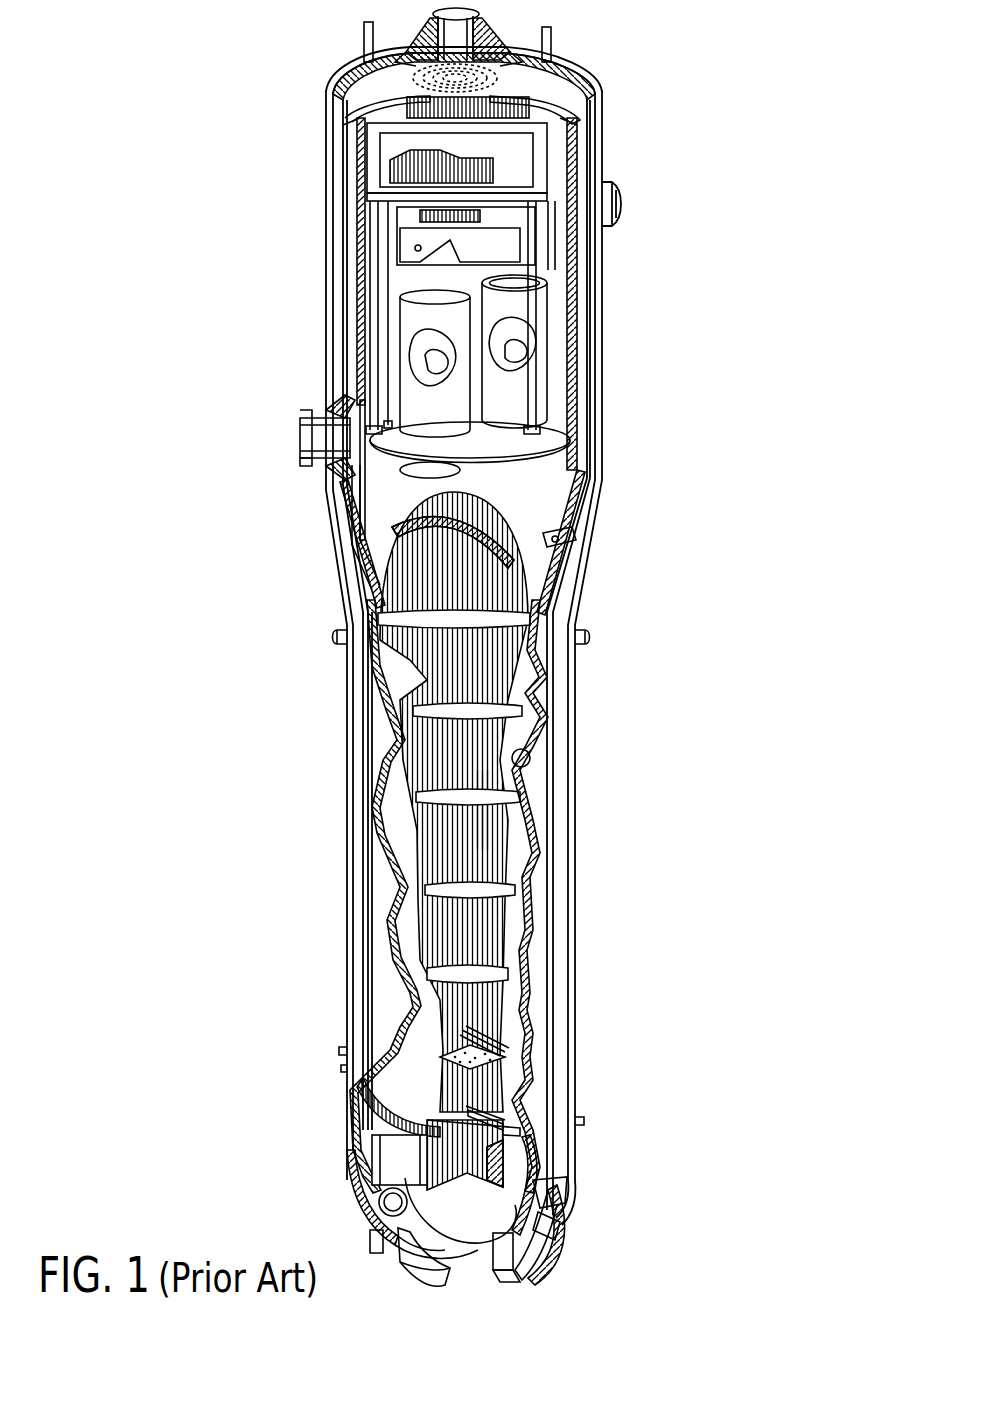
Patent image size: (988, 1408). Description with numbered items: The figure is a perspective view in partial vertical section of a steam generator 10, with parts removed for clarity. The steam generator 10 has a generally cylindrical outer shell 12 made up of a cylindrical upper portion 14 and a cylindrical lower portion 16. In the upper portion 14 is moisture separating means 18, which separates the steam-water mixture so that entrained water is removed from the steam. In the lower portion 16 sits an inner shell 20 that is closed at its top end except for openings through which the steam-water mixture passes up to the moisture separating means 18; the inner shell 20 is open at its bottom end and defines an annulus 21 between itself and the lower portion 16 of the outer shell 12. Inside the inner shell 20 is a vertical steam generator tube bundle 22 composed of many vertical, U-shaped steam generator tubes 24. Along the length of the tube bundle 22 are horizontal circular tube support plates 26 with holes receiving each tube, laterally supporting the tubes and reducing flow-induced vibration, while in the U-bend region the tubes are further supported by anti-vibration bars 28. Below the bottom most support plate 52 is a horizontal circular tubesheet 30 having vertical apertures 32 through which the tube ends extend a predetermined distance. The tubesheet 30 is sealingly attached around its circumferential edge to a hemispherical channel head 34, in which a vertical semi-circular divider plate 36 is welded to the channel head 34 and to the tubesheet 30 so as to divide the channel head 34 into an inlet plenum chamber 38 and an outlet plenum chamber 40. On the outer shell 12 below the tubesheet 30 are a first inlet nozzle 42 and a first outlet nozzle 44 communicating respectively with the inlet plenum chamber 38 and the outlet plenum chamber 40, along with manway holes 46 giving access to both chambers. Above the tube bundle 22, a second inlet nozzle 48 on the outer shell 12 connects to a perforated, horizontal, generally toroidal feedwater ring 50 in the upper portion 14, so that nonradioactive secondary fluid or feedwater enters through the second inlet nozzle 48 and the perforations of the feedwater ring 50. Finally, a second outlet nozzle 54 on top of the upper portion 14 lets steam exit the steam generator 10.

The steam generator 10 is at (612, 438).
The outer shell 12 is at (600, 302).
The cylindrical upper portion 14 is at (332, 203).
The cylindrical lower portion 16 is at (355, 972).
The moisture separating means 18 is at (425, 178).
The inner shell 20 is at (527, 707).
The annulus 21 is at (530, 760).
The steam generator tube bundle 22 is at (490, 935).
The steam generator tubes 24 is at (480, 843).
The tube support plates 26 is at (445, 892).
The anti-vibration bars 28 is at (565, 535).
The tubesheet 30 is at (382, 1168).
The apertures 32 is at (485, 1163).
The channel head 34 is at (560, 1186).
The divider plate 36 is at (548, 1242).
The inlet plenum chamber 38 is at (480, 1203).
The outlet plenum chamber 40 is at (374, 1180).
The first inlet nozzle 42 is at (550, 1228).
The first outlet nozzle 44 is at (425, 1276).
The manway holes 46 is at (385, 1206).
The second inlet nozzle 48 is at (318, 458).
The feedwater ring 50 is at (330, 512).
The bottom most support plate 52 is at (505, 1062).
The second outlet nozzle 54 is at (463, 17).